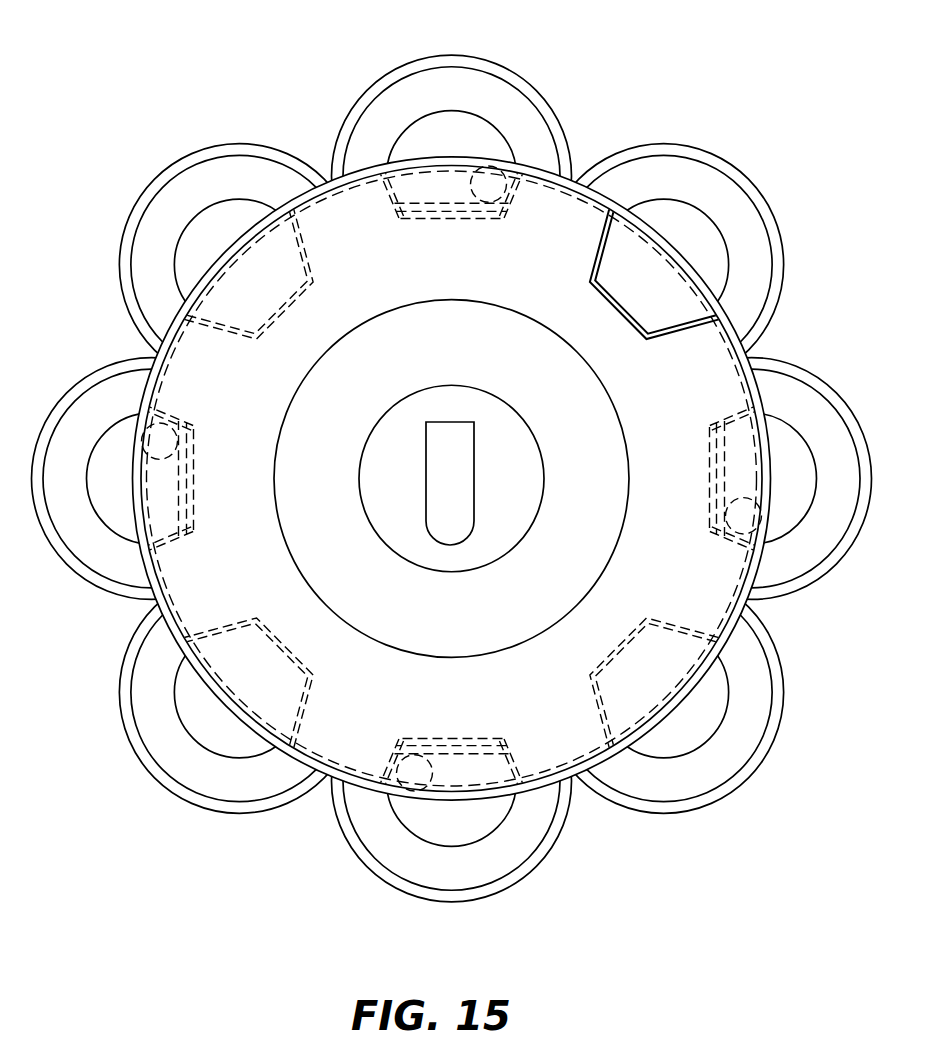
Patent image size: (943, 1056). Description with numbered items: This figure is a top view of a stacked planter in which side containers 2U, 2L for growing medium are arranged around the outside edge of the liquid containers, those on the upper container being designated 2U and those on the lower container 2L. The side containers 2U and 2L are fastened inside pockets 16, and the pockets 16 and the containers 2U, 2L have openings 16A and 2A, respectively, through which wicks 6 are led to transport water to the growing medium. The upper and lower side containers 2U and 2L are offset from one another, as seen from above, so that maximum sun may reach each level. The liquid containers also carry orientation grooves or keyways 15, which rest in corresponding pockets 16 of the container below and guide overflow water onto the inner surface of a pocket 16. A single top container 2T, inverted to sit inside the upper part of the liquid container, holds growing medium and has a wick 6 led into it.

The top container 2T is at (760, 350).
The upper side container 2U is at (505, 98).
The lower side container 2L is at (213, 183).
The opening in side container 2A is at (452, 478).
The wick 6 is at (452, 488).
The orientation groove 15 is at (273, 678).
The pocket 16 is at (480, 737).
The opening in pocket 16A is at (735, 518).